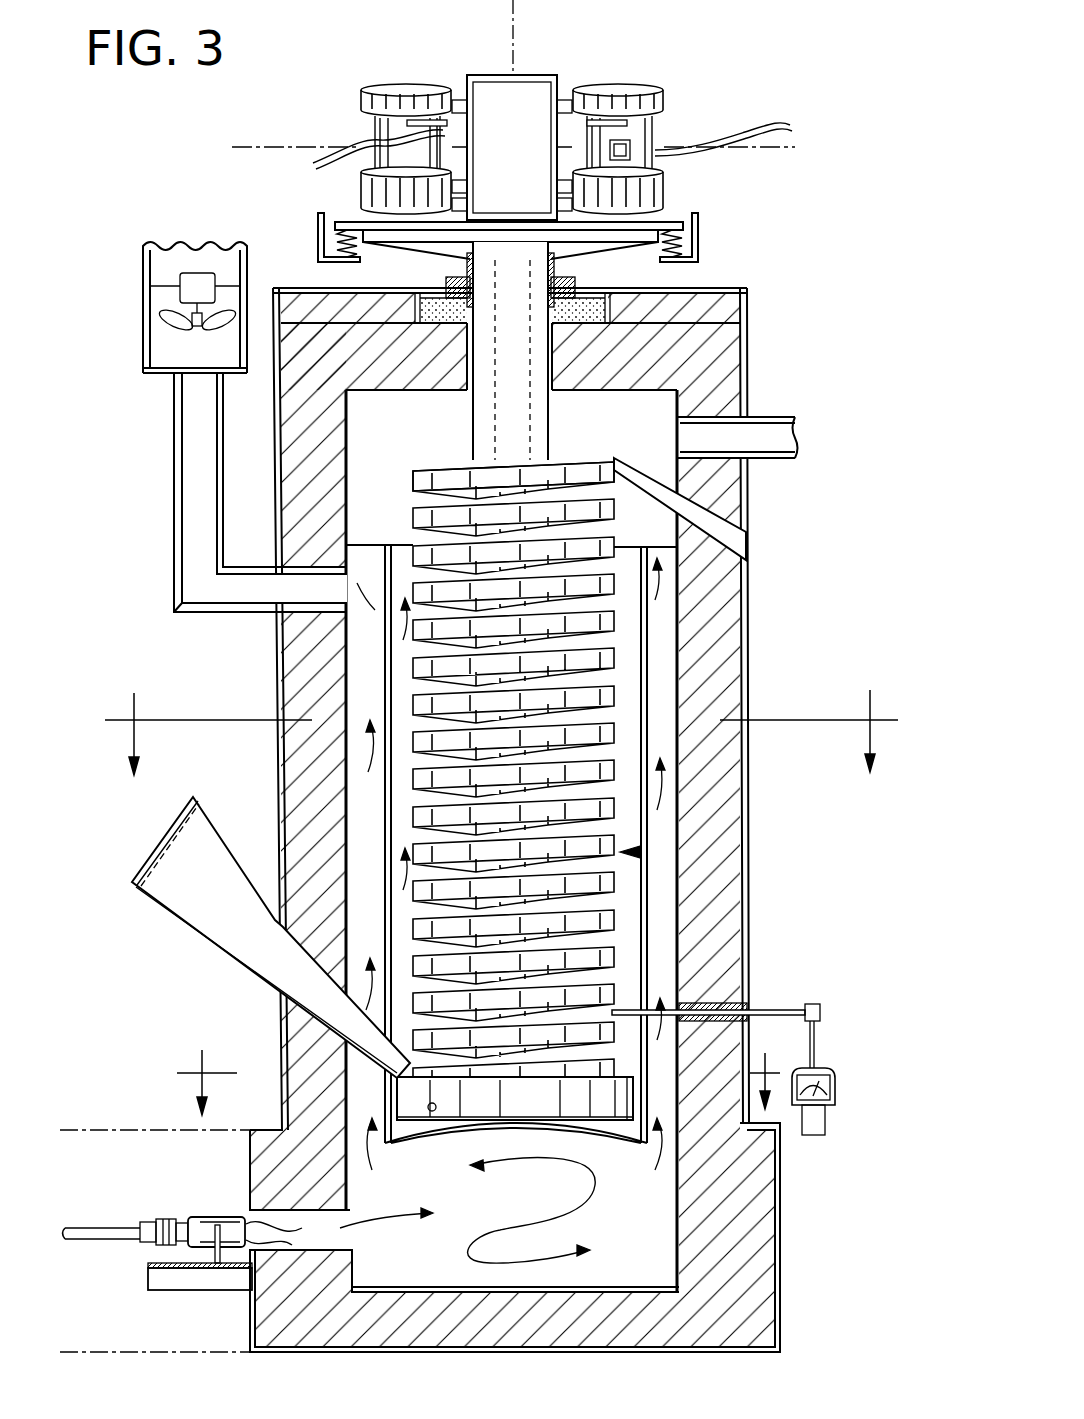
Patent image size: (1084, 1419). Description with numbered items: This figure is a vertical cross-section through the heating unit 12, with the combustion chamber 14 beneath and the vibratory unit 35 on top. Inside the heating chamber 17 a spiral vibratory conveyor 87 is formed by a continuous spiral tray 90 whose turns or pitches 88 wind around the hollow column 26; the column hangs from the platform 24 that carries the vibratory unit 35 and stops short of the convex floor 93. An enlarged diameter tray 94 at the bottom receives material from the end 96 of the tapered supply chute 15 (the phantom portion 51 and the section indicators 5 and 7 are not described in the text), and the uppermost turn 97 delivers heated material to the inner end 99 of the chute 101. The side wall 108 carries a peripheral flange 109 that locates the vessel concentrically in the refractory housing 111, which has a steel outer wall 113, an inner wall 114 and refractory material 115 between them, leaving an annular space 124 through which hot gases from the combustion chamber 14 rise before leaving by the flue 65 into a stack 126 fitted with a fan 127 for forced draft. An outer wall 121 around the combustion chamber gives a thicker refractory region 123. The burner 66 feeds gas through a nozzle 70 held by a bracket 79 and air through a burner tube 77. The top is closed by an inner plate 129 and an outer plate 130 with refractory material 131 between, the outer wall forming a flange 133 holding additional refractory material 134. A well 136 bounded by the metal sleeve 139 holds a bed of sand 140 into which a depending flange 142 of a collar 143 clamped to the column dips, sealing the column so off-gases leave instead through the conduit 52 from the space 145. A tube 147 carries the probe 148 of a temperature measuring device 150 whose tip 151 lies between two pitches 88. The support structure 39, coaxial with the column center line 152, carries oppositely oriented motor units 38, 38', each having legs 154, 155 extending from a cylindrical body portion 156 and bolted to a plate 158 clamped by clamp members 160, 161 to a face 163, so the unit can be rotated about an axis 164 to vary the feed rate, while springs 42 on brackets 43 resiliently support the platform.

The section line 5- 5 is at (501, 732).
The section line 7- 7 is at (485, 1078).
The heating unit 12 is at (805, 910).
The combustion chamber 14 is at (662, 1235).
The supply chute 15 is at (177, 918).
The heating chamber 17 is at (683, 610).
The platform 24 is at (657, 223).
The column 26 is at (550, 248).
The vibratory unit 35 is at (562, 68).
The electric motor unit 38 is at (383, 130).
The electric motor unit 38' is at (653, 129).
The support structure 39 is at (493, 75).
The springs 42 is at (340, 247).
The brackets 43 is at (318, 227).
The chute inlet (phantom) 51 is at (162, 848).
The conduit 52 is at (765, 460).
The flue 65 is at (175, 480).
The burner 66 is at (110, 1128).
The nozzle 70 is at (215, 1215).
The burner tube 77 is at (262, 1215).
The bracket 79 is at (185, 1291).
The spiral vibratory conveyor 87 is at (640, 852).
The turns or pitches 88 is at (616, 697).
The spiral tray 90 is at (601, 792).
The floor 93 is at (420, 1140).
The enlarged diameter tray 94 is at (453, 1123).
The chute end 96 is at (367, 1080).
The uppermost turn 97 is at (560, 460).
The inner end 99 is at (640, 475).
The chute 101 is at (745, 560).
The side wall 108 is at (390, 547).
The peripheral flange 109 is at (365, 537).
The refractory housing 111 is at (268, 689).
The outer wall 113 is at (275, 752).
The inner wall 114 is at (343, 660).
The refractory material 115 is at (300, 1035).
The outer wall 121 is at (780, 1277).
The thicker refractory region 123 is at (757, 1177).
The annular space 124 is at (362, 830).
The stack 126 is at (145, 372).
The fan 127 is at (178, 290).
The inner plate 129 is at (570, 395).
The outer plate 130 is at (735, 335).
The refractory material 131 is at (318, 357).
The flange 133 is at (743, 300).
The additional refractory material 134 is at (730, 288).
The well 136 is at (590, 298).
The metal sleeve 139 is at (467, 380).
The bed of sand 140 is at (650, 300).
The depending flange 142 is at (450, 287).
The collar 143 is at (467, 262).
The space 145 is at (660, 405).
The tube 147 is at (726, 994).
The probe 148 is at (861, 1055).
The temperature measuring device 150 is at (835, 1090).
The temperature measuring tip 151 is at (700, 1045).
The center line 152 is at (517, 42).
The leg 154 is at (437, 137).
The leg 155 is at (420, 155).
The cylindrical body portion 156 is at (345, 160).
The plate 158 is at (380, 182).
The clamp member 160 is at (460, 98).
The clamp member 161 is at (462, 212).
The face 163 is at (463, 83).
The axis 164 is at (262, 140).